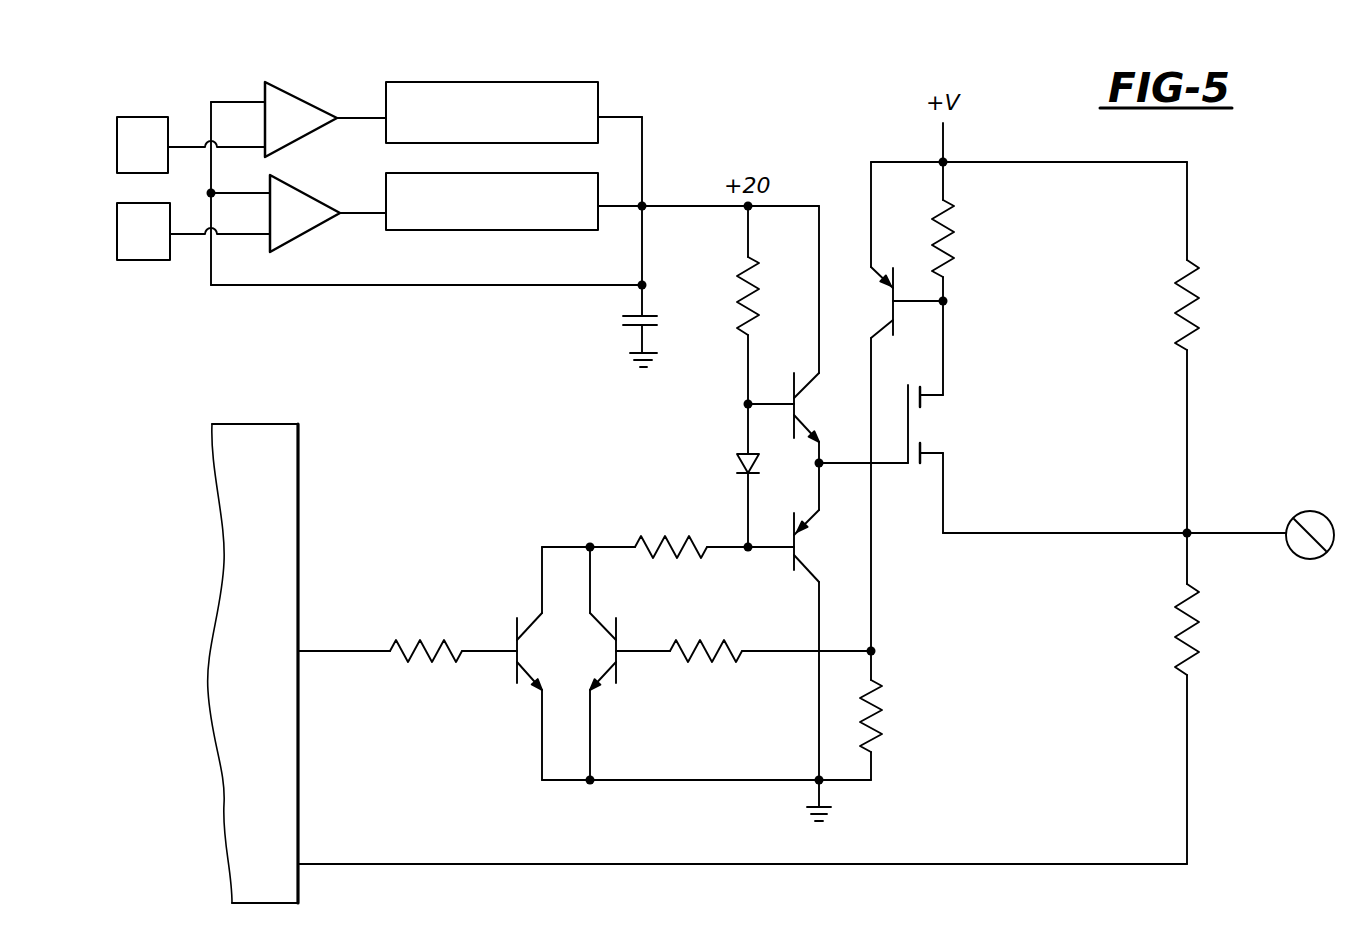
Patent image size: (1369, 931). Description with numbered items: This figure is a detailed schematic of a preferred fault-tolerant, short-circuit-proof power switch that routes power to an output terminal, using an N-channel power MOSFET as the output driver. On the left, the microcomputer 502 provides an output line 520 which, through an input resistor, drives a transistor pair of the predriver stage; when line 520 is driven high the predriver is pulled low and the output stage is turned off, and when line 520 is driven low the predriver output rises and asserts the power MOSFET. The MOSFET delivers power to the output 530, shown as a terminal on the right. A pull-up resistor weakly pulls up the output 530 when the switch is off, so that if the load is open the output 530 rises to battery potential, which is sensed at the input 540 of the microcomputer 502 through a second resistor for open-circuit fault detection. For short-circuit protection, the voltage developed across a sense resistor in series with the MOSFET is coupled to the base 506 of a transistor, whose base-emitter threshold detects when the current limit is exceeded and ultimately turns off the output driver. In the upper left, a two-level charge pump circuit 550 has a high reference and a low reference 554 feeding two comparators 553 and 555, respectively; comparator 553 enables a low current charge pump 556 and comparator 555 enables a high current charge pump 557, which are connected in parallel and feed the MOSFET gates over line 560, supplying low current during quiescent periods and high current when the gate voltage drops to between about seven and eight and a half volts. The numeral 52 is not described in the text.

The high reference voltage input 52 is at (138, 116).
The low reference 554 is at (162, 262).
The voltage comparator 553 is at (318, 108).
The second comparator 555 is at (327, 222).
The low current charge pump 556 is at (598, 98).
The high current charge pump 557 is at (598, 185).
The two-level charge pump circuit 550 is at (703, 118).
The line 560 is at (698, 207).
The base of transistor Q6 506 is at (918, 300).
The microcomputer 502 is at (943, 378).
The output 530 is at (1230, 533).
The output of microcomputer 520 is at (353, 651).
The input of microcomputer 540 is at (432, 864).